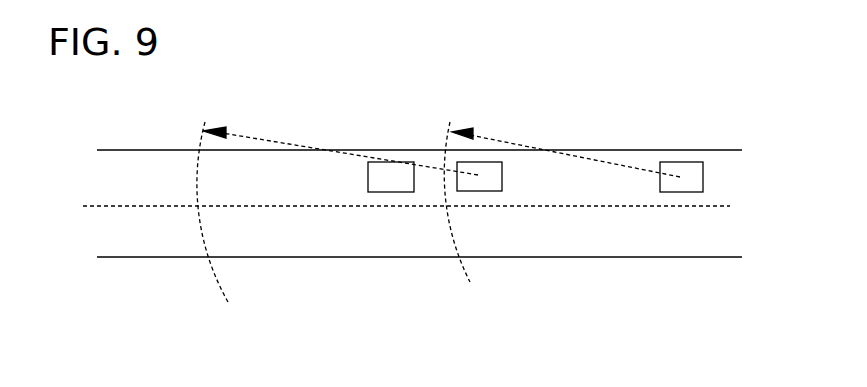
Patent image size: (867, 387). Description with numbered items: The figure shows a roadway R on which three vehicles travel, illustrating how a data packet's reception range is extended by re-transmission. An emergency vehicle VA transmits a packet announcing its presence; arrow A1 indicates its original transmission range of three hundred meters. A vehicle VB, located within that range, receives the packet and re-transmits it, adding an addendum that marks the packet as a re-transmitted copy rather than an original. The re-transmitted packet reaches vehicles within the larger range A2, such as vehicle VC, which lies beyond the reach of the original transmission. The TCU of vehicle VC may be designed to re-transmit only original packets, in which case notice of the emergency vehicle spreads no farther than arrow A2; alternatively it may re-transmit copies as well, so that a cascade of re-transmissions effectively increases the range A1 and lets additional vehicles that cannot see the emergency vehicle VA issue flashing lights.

The road / lane region R is at (146, 245).
The emergency vehicle VA is at (699, 178).
The vehicle VB is at (497, 177).
The vehicle VC is at (391, 177).
The transmission range A1 is at (562, 198).
The extended range A2 is at (337, 207).